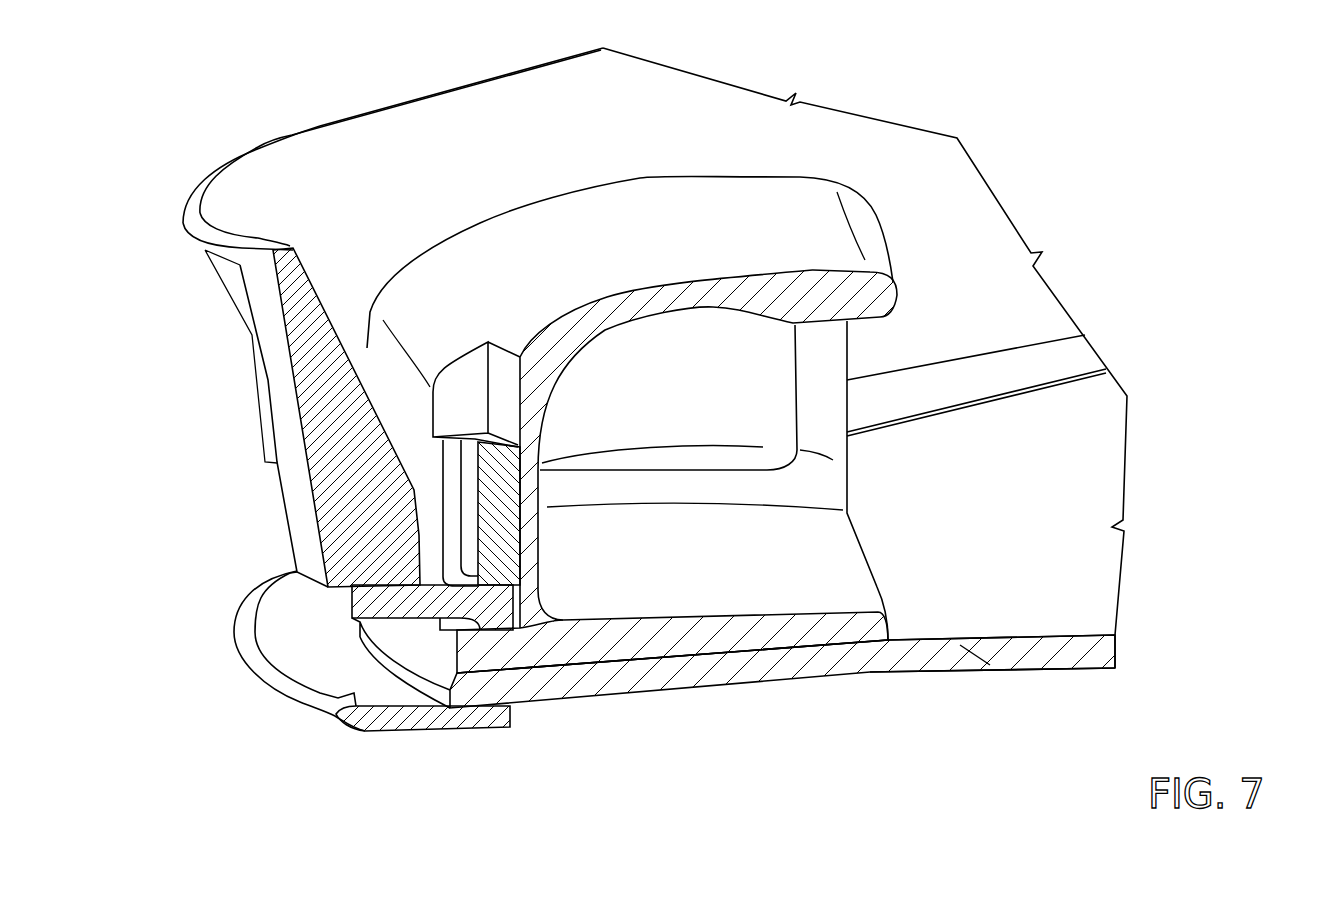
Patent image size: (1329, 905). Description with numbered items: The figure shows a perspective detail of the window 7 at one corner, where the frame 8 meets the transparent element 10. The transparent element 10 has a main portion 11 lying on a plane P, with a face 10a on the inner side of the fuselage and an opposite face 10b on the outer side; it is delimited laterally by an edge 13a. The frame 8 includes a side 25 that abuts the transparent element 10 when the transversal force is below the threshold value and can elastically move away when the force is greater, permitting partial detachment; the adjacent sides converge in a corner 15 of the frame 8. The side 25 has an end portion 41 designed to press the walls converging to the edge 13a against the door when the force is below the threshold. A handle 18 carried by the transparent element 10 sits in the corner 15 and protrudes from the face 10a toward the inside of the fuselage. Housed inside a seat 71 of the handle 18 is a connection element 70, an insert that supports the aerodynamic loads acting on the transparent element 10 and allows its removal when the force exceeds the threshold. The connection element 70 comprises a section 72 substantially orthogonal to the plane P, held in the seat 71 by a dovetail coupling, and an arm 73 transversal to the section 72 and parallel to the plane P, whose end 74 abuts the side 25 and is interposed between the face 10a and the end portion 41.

The window 7 is at (980, 157).
The frame 8 is at (312, 162).
The handle 18 is at (688, 227).
The side 25 is at (323, 345).
The end portion 41 is at (403, 540).
The end 74 is at (355, 558).
The corner 15 is at (341, 597).
The edge 13a is at (411, 674).
The arm 73 is at (419, 607).
The connection element 70 is at (702, 536).
The seat 71 is at (488, 620).
The section 72 is at (507, 557).
The transparent element 10 is at (814, 641).
The face 10a is at (949, 633).
The face 10b is at (947, 672).
The main portion 11 is at (997, 658).
The plane P is at (1015, 633).